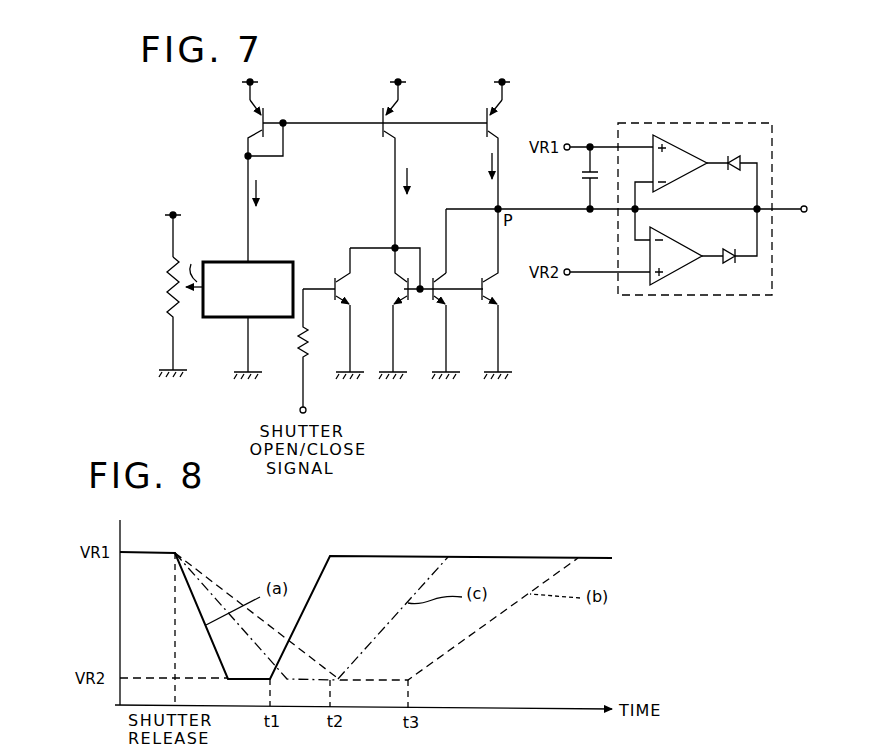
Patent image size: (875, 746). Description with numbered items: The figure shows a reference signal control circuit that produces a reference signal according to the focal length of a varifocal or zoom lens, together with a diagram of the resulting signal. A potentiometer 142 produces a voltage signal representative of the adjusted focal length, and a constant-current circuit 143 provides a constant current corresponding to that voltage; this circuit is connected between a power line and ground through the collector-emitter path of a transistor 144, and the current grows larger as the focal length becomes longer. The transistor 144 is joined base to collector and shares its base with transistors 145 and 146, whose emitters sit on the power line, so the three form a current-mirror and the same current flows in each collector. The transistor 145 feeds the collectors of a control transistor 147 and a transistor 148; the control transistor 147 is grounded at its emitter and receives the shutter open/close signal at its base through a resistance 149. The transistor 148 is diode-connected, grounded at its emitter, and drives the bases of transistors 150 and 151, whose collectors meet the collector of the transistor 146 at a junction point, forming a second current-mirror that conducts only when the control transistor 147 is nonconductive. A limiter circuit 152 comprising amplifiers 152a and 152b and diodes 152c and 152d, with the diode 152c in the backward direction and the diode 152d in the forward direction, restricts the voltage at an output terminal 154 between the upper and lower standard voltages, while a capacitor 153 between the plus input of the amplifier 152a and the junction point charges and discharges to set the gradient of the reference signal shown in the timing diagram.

The potentiometer 142 is at (176, 284).
The constant-current circuit 143 is at (225, 319).
The transistor 144 is at (258, 118).
The transistor 145 is at (392, 118).
The transistor 146 is at (499, 124).
The control transistor 147 is at (344, 275).
The transistor 148 is at (404, 289).
The resistance 149 is at (306, 332).
The transistor 150 is at (437, 308).
The transistor 151 is at (486, 308).
The limiter circuit 152 is at (699, 120).
The amplifier 152a is at (693, 172).
The amplifier 152b is at (694, 251).
The diode 152c is at (735, 157).
The diode 152d is at (728, 264).
The capacitor 153 is at (580, 177).
The output terminal 154 is at (805, 215).